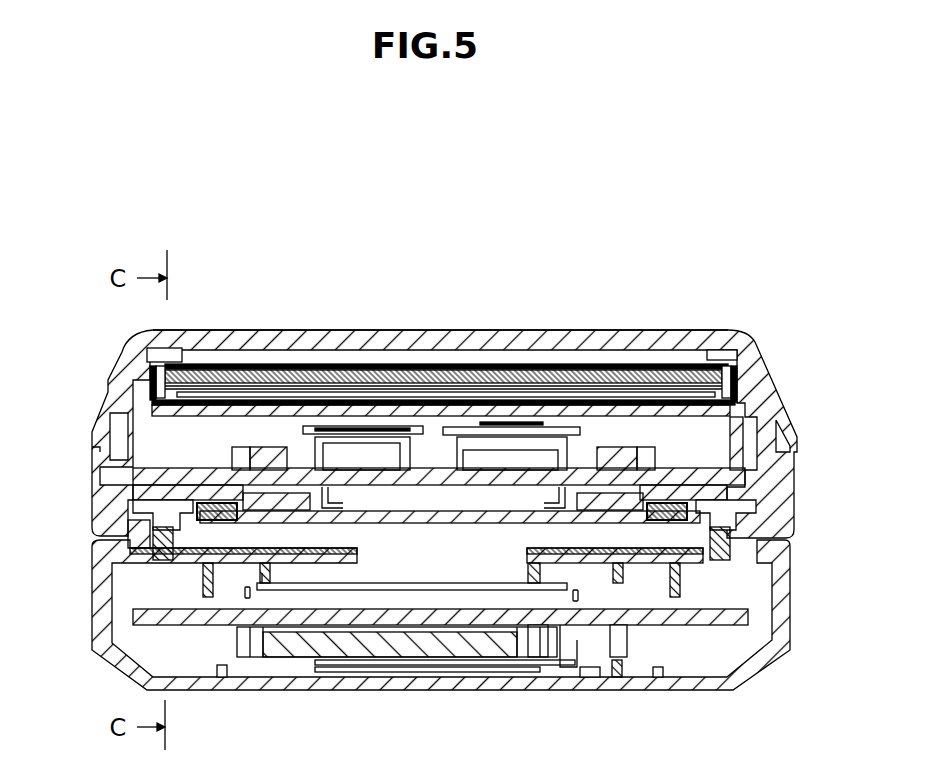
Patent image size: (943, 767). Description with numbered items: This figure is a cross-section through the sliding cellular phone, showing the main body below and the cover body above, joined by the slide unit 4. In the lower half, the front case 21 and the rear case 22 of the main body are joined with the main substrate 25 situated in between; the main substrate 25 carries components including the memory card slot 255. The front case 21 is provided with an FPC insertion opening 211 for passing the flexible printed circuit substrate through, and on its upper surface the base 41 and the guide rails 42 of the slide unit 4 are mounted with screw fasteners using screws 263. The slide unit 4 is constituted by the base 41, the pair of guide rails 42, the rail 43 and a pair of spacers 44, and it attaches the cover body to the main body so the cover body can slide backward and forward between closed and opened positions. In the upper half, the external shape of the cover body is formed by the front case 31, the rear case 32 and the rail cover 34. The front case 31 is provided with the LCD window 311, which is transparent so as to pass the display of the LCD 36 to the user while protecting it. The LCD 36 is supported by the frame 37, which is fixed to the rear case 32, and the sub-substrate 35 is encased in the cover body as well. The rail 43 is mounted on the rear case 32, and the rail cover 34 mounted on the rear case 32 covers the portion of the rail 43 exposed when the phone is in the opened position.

The slide unit 4 is at (450, 512).
The base 41 is at (257, 557).
The guide rails 42 is at (143, 517).
The rail 43 is at (253, 513).
The spacers 44 is at (200, 520).
The LCD window 311 is at (470, 340).
The LCD 36 is at (540, 375).
The frame 37 is at (741, 417).
The front case 31 is at (787, 440).
The rear case 32 is at (790, 470).
The sub-substrate 35 is at (100, 446).
The rail cover 34 is at (373, 518).
The screws 263 is at (147, 562).
The front case 21 is at (783, 618).
The rear case 22 is at (752, 667).
The main substrate 25 is at (660, 620).
The memory card slot 255 is at (418, 647).
The FPC insertion opening 211 is at (456, 560).